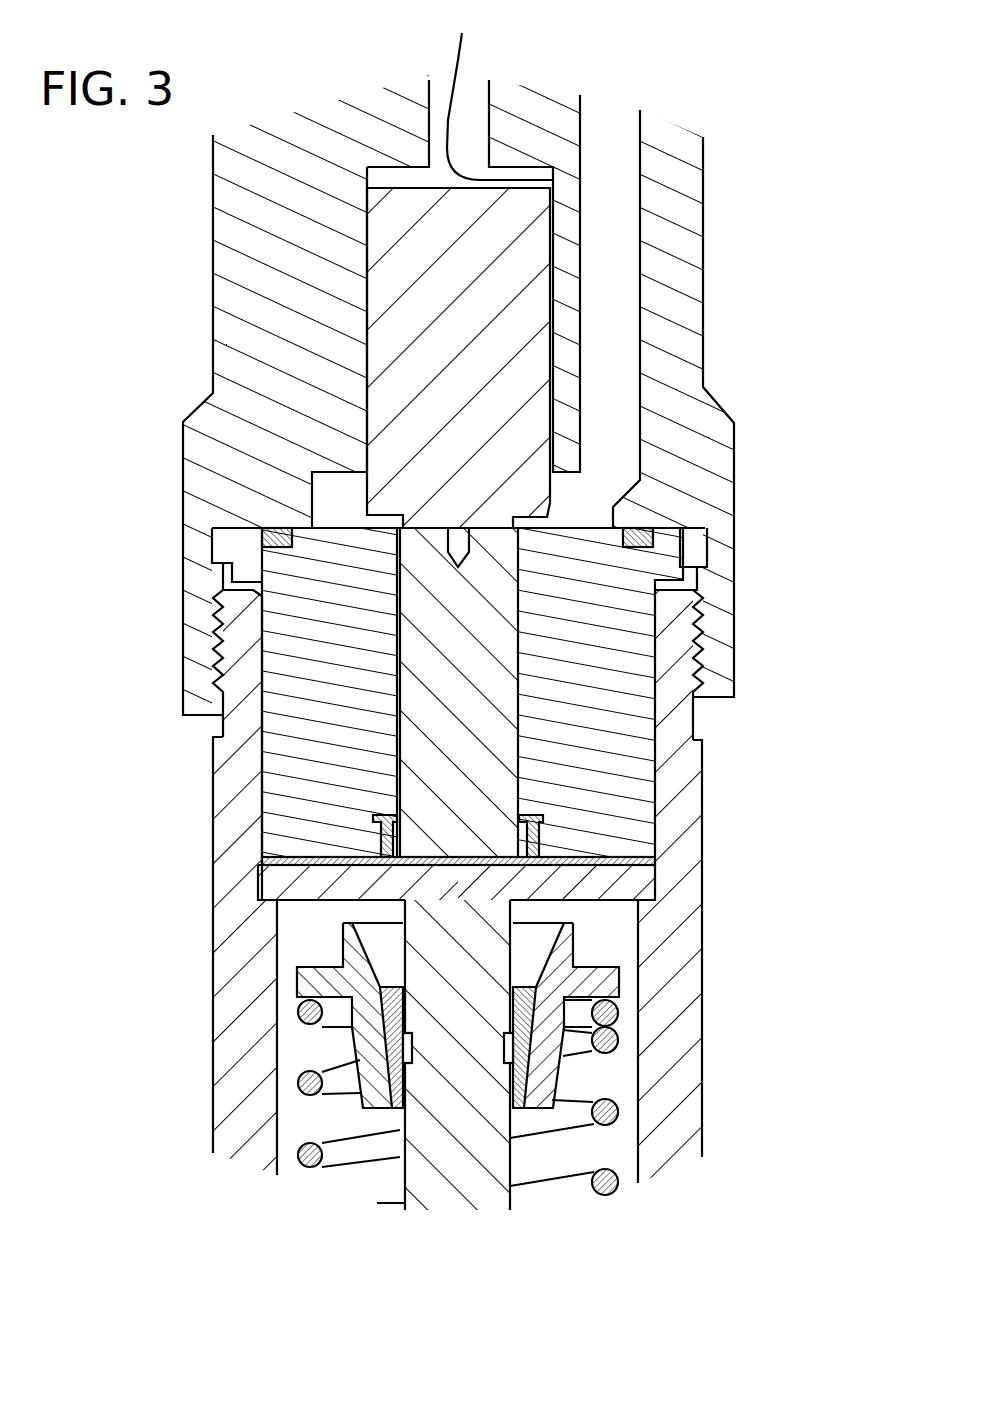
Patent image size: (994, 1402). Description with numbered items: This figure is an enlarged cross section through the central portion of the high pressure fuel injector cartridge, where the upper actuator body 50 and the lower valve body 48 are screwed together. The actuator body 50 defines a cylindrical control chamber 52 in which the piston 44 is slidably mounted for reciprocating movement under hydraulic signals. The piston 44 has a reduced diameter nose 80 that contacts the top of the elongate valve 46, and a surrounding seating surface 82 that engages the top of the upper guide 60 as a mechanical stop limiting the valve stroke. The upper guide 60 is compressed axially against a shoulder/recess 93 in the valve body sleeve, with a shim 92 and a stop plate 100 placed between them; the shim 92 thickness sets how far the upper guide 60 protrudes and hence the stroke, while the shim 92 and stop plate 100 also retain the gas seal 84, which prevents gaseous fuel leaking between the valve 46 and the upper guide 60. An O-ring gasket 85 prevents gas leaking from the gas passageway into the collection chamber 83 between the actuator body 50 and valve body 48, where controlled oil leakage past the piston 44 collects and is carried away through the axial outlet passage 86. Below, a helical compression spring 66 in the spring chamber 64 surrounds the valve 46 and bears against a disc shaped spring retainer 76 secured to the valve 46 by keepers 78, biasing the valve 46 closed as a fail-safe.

The piston 44 is at (410, 312).
The valve 46 is at (450, 672).
The valve body 48 is at (713, 758).
The actuator body 50 is at (535, 135).
The control chamber 52 is at (500, 91).
The upper guide 60 is at (580, 672).
The spring chamber 64 is at (623, 960).
The spring 66 is at (608, 1186).
The spring retainer 76 is at (548, 1098).
The keepers 78 is at (550, 1072).
The nose 80 is at (422, 530).
The seating surface 82 is at (290, 514).
The collection chamber 83 is at (580, 500).
The gas seal 84 is at (375, 828).
The O-ring gasket 85 is at (212, 574).
The axial outlet passage 86 is at (608, 228).
The shim 92 is at (265, 860).
The shoulder/recess 93 is at (300, 885).
The stop plate 100 is at (277, 905).